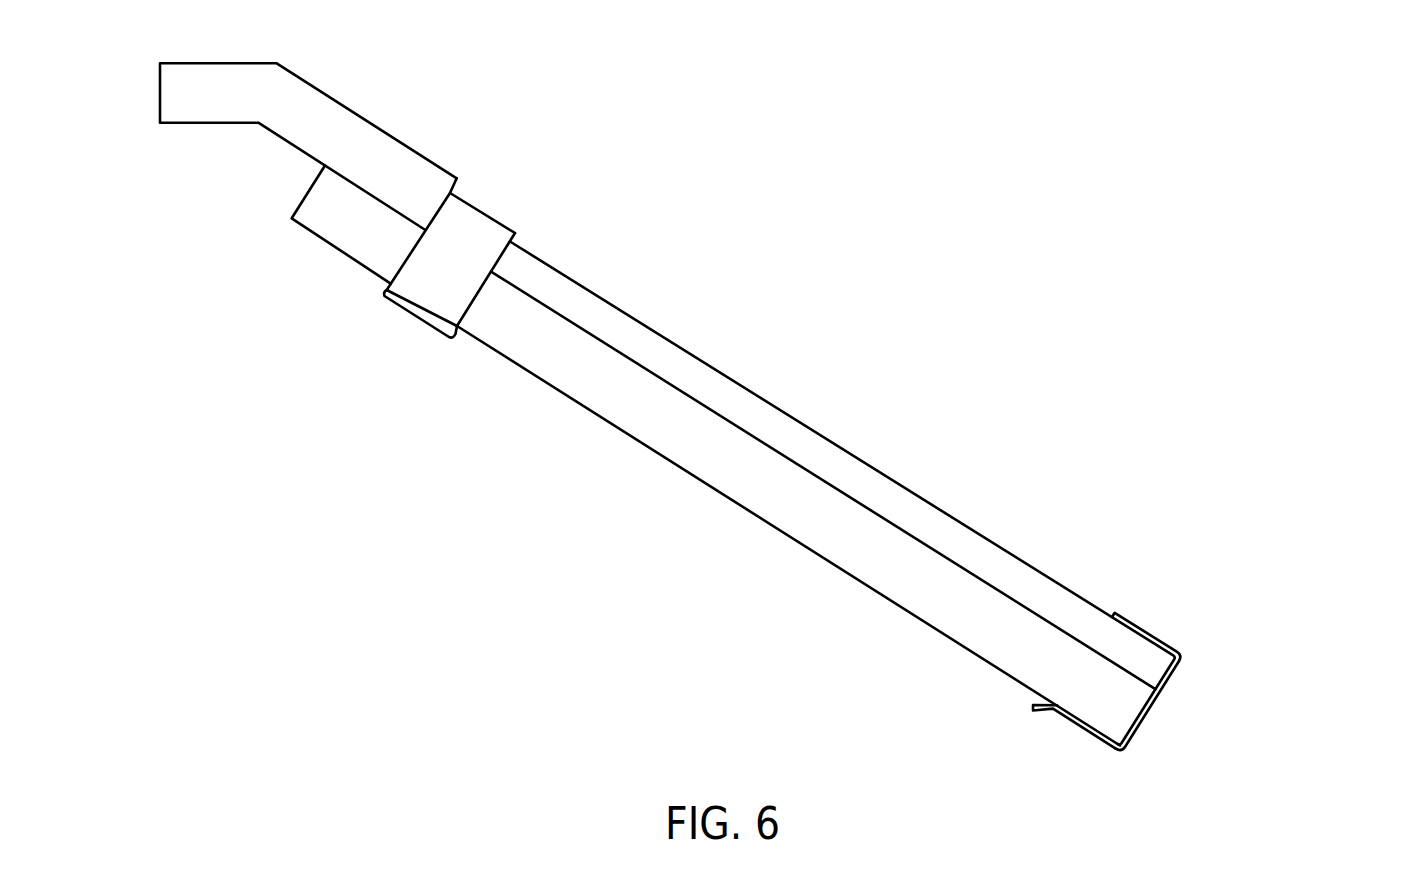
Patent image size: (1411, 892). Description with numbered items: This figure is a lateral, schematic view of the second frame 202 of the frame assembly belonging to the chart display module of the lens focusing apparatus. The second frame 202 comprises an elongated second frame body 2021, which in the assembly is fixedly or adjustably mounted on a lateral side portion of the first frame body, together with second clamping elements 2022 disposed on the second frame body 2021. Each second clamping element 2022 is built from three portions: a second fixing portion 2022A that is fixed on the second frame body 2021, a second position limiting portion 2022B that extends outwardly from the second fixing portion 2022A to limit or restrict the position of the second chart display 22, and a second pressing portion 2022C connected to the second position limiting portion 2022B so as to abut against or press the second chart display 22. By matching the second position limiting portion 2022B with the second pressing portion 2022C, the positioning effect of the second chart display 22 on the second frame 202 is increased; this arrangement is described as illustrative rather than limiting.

The second frame 202 is at (118, 44).
The second frame body 2021 is at (806, 454).
The second chart display 22 is at (796, 513).
The second clamping element 2022 is at (887, 483).
The second fixing portion 2022A is at (485, 214).
The second position limiting portion 2022B is at (453, 260).
The second pressing portion 2022C is at (415, 318).